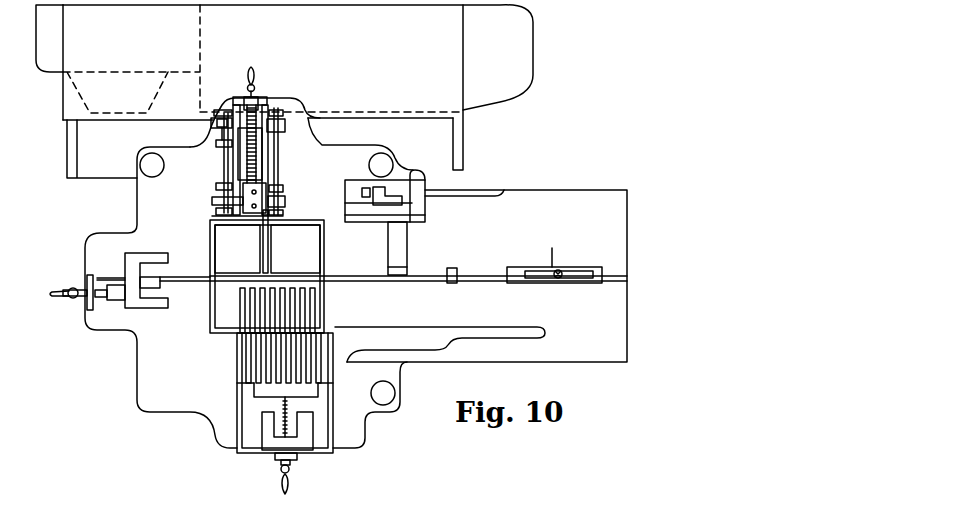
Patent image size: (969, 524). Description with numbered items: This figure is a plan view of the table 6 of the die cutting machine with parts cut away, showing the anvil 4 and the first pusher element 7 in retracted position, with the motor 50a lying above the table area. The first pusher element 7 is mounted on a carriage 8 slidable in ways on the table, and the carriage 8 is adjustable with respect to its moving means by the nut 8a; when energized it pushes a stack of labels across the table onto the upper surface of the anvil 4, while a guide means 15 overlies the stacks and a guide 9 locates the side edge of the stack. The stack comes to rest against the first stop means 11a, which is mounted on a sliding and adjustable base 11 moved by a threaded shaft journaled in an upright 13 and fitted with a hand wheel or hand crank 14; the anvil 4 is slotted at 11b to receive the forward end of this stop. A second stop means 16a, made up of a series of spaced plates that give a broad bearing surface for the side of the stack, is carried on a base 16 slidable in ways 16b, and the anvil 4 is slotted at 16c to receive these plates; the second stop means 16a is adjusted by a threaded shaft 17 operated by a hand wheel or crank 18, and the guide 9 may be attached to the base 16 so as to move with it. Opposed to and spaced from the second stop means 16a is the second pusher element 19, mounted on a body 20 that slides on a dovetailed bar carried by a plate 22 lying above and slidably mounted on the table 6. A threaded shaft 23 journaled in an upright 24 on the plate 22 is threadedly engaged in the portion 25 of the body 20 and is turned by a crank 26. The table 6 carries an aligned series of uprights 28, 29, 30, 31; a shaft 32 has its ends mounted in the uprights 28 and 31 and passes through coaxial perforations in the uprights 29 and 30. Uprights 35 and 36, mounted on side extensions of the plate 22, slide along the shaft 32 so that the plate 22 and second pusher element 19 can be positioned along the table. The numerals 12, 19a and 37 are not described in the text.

The motor 50a is at (512, 38).
The anvil 4 is at (228, 330).
The table 6 is at (597, 223).
The first pusher element 7 is at (468, 270).
The carriage 8 is at (520, 268).
The nut 8a is at (562, 271).
The guide 9 is at (520, 330).
The sliding and adjustable base 11 is at (118, 312).
The first stop means 11a is at (190, 283).
The anvil slot for first stop means 11b is at (232, 271).
The bracket 12 is at (105, 286).
The upright 13 is at (90, 314).
The hand wheel or hand crank 14 is at (60, 299).
The guide means 15 is at (375, 280).
The base 16 is at (248, 428).
The second stop means 16a is at (260, 356).
The ways 16b is at (238, 438).
The anvil slots for second stop plates 16c is at (293, 305).
The threaded shaft 17 is at (282, 408).
The hand wheel or crank 18 is at (292, 484).
The second pusher element 19 is at (287, 202).
The rod block 19a is at (272, 250).
The body 20 is at (240, 163).
The plate 22 is at (238, 122).
The threaded shaft 23 is at (250, 172).
The upright 24 is at (260, 98).
The threaded portion of body 25 is at (285, 128).
The crank 26 is at (255, 87).
The upright 28 is at (212, 113).
The upright 29 is at (222, 148).
The upright 30 is at (220, 188).
The upright 31 is at (218, 214).
The shaft 32 is at (220, 180).
The upright 35 is at (218, 141).
The upright 36 is at (214, 202).
The nut 37 is at (211, 122).